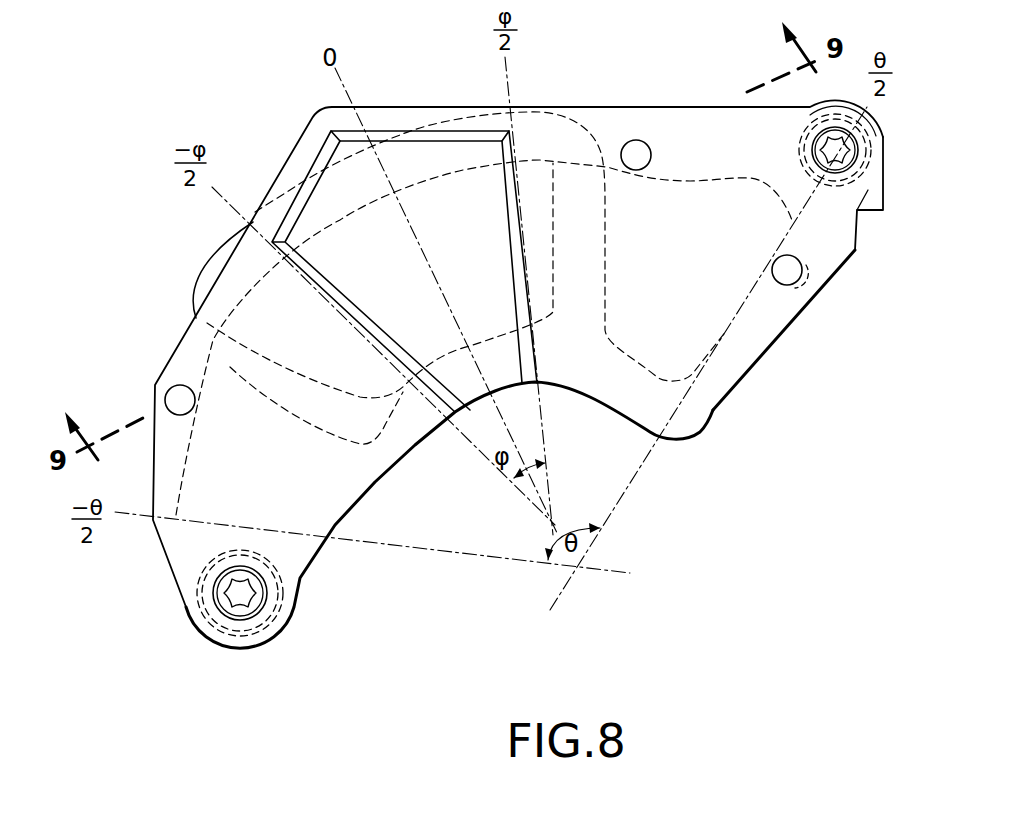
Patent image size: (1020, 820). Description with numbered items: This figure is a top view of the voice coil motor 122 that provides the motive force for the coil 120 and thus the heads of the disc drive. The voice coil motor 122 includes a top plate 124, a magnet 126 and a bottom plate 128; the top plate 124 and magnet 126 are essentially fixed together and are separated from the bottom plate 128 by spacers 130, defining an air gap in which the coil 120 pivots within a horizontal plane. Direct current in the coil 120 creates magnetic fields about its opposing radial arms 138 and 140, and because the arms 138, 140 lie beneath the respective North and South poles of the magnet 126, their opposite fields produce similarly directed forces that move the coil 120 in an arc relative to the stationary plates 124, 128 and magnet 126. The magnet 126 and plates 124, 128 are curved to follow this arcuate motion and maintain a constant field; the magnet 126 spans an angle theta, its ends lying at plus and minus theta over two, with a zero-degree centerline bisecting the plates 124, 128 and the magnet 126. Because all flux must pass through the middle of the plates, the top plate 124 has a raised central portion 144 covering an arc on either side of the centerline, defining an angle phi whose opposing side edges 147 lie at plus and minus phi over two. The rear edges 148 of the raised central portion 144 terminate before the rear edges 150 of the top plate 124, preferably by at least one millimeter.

The coil 120 is at (343, 220).
The voice coil motor 122 is at (748, 406).
The top plate 124 is at (828, 255).
The magnet 126 is at (690, 185).
The bottom plate 128 is at (890, 195).
The spacers 130 is at (868, 148).
The radial arm 138 is at (250, 382).
The radial arm 140 is at (607, 213).
The raised central portion 144 is at (500, 260).
The side edges 147 is at (510, 190).
The rear edges 148 is at (450, 133).
The rear edges 150 is at (390, 107).